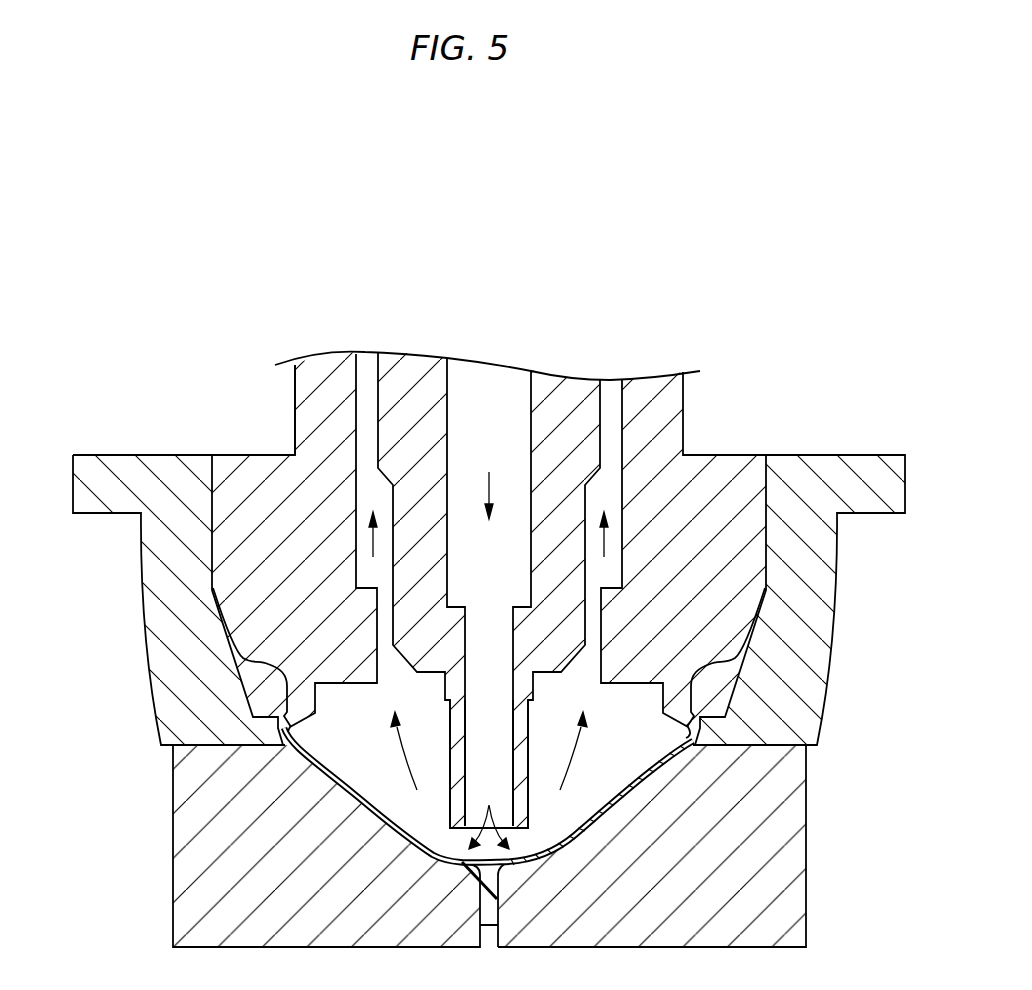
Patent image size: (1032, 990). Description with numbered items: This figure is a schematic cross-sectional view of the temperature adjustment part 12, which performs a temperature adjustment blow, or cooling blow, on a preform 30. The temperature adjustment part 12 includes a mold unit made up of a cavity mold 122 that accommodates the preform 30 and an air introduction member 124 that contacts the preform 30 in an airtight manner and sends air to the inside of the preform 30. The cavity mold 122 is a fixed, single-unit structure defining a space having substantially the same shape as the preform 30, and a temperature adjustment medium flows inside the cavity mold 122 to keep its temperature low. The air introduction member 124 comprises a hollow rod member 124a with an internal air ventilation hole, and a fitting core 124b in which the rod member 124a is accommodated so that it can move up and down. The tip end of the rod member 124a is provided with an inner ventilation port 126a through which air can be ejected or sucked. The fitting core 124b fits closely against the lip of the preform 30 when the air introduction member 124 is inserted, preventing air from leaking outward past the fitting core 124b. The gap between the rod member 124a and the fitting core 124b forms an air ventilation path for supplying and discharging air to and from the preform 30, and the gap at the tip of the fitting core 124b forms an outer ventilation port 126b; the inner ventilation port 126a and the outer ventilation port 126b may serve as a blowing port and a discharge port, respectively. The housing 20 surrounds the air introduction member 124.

The temperature adjustment part 12 is at (778, 218).
The housing 20 is at (150, 585).
The preform 30 is at (643, 807).
The cavity mold 122 is at (770, 848).
The air introduction member 124 is at (231, 442).
The rod member 124a is at (530, 788).
The fitting core 124b is at (269, 455).
The inner ventilation port 126a is at (413, 851).
The outer ventilation port 126b is at (385, 645).